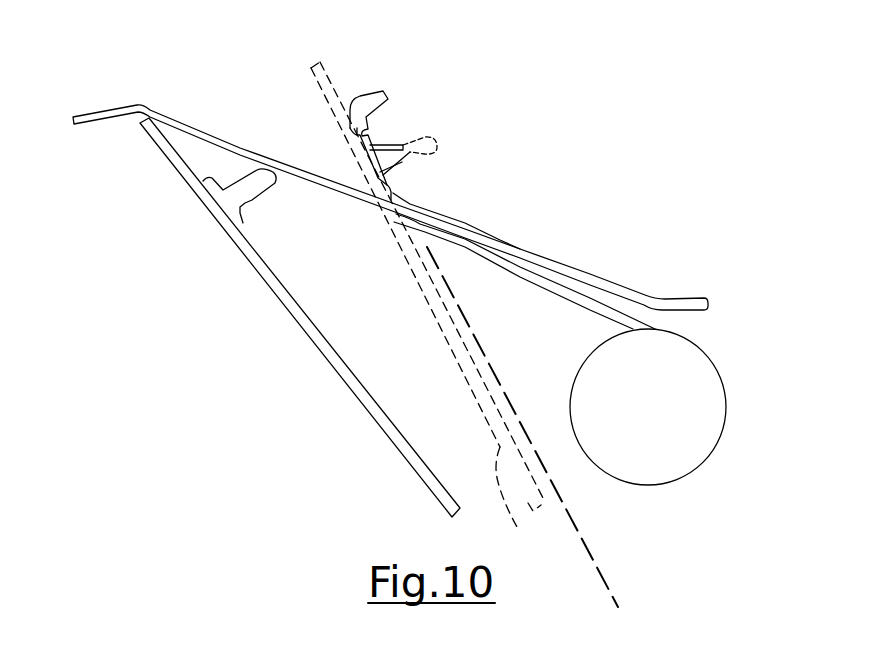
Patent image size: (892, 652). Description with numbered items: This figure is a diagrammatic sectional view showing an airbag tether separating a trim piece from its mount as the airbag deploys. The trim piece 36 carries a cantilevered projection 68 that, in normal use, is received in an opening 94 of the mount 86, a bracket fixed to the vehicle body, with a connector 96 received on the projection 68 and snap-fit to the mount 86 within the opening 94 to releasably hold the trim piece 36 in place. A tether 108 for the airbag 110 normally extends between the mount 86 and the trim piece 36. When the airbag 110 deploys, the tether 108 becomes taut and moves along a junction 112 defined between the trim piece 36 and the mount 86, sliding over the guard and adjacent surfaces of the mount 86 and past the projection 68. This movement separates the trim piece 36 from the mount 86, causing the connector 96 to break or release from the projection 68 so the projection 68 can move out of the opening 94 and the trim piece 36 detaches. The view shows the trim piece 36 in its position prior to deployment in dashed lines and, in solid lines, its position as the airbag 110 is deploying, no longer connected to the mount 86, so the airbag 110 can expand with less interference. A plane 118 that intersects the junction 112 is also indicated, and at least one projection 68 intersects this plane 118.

The trim piece 36 is at (317, 366).
The projection 68 is at (253, 187).
The mount 86 is at (486, 216).
The opening 94 is at (380, 160).
The connector 96 is at (432, 148).
The tether 108 is at (247, 147).
The airbag 110 is at (708, 413).
The junction 112 is at (345, 92).
The plane 118 is at (599, 565).